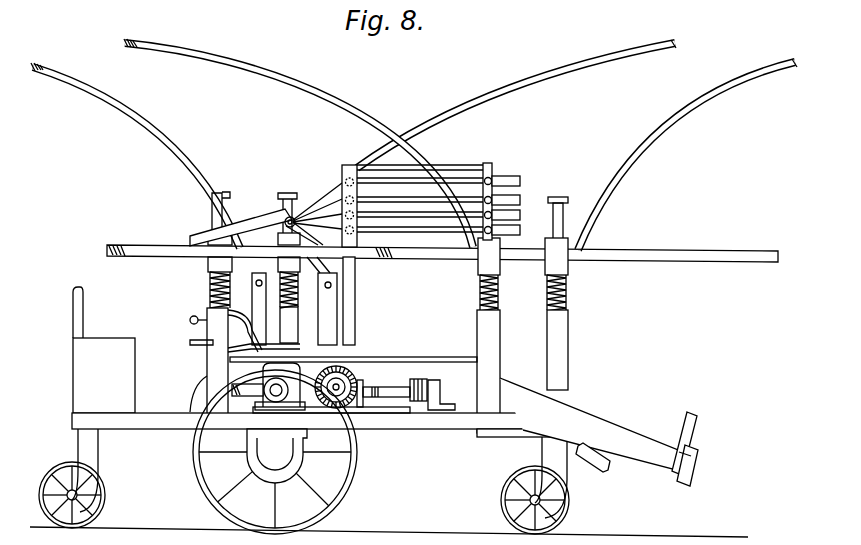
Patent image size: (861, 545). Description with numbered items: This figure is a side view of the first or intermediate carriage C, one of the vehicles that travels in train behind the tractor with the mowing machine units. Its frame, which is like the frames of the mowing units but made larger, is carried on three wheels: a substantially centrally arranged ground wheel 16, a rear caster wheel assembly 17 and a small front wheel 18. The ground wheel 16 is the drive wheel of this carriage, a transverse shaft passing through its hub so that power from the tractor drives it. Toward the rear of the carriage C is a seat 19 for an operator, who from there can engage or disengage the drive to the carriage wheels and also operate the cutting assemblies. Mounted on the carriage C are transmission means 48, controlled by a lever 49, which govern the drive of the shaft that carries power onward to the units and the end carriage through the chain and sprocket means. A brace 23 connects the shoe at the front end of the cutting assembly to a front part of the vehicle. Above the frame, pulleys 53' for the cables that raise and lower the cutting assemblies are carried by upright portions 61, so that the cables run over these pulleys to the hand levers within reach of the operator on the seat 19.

The pulleys 53' is at (434, 195).
The upright portions 61 is at (356, 292).
The lever 49 is at (207, 312).
The transmission means 48 is at (302, 376).
The seat 19 is at (128, 383).
The rear caster wheel assembly 17 is at (103, 507).
The ground wheel 16 is at (346, 487).
The front small wheel 18 is at (570, 508).
The brace 23 is at (611, 470).
The first or intermediate carriage C is at (440, 455).